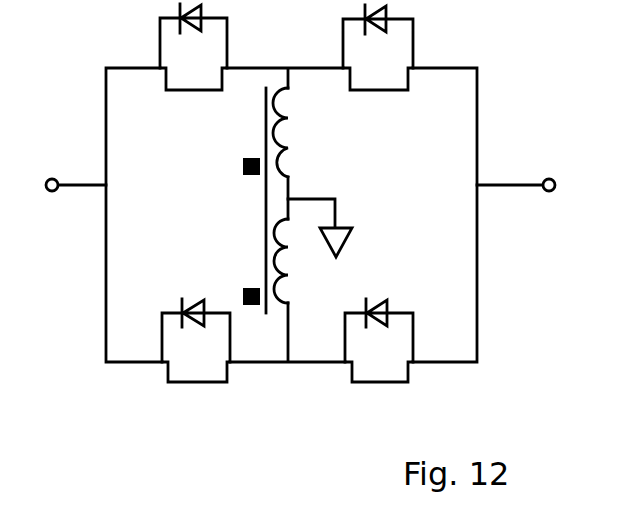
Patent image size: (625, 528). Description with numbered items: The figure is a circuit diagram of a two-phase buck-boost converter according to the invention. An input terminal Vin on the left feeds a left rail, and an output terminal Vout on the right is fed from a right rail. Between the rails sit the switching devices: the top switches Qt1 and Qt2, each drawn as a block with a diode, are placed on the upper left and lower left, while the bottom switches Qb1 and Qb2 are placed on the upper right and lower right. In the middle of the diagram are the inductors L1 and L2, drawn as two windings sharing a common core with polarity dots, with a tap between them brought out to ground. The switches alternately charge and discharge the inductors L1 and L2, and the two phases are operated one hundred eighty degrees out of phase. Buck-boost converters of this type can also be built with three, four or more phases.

The top switch Qt1 is at (193, 47).
The bottom switch Qb1 is at (378, 47).
The top switch Qt2 is at (196, 340).
The bottom switch Qb2 is at (379, 340).
The inductor L1 is at (284, 148).
The inductor L2 is at (284, 277).
The input voltage terminal Vin is at (70, 169).
The output voltage terminal Vout is at (529, 169).